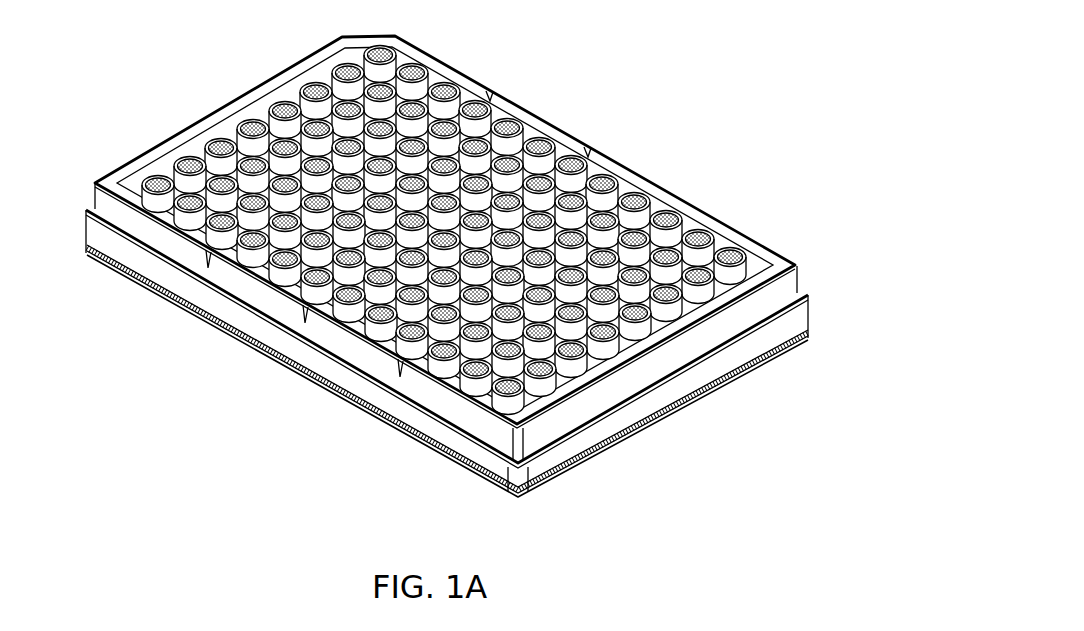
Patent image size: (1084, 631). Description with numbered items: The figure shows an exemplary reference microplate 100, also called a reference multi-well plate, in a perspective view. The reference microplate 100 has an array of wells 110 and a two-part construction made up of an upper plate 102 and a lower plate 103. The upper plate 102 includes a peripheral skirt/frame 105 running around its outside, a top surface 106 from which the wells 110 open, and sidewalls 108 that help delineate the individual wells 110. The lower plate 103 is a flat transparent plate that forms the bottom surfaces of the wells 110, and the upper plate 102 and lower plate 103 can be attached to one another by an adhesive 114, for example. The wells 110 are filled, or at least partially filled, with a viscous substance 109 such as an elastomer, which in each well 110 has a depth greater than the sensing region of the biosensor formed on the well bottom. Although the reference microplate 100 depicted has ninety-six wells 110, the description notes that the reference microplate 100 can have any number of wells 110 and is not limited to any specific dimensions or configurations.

The reference microplate 100 is at (694, 38).
The upper plate 102 is at (294, 66).
The lower plate 103 is at (611, 452).
The peripheral skirt/frame 105 is at (800, 268).
The top surface 106 is at (195, 148).
The sidewalls 108 is at (637, 335).
The viscous substance 109 is at (398, 362).
The wells 110 is at (547, 147).
The adhesive 114 is at (87, 246).